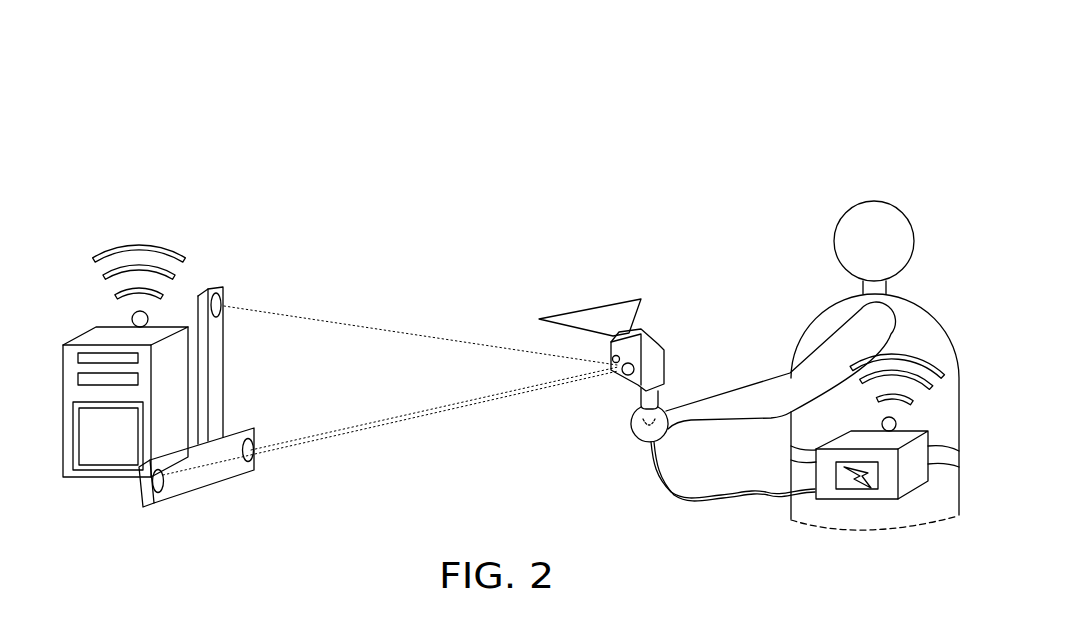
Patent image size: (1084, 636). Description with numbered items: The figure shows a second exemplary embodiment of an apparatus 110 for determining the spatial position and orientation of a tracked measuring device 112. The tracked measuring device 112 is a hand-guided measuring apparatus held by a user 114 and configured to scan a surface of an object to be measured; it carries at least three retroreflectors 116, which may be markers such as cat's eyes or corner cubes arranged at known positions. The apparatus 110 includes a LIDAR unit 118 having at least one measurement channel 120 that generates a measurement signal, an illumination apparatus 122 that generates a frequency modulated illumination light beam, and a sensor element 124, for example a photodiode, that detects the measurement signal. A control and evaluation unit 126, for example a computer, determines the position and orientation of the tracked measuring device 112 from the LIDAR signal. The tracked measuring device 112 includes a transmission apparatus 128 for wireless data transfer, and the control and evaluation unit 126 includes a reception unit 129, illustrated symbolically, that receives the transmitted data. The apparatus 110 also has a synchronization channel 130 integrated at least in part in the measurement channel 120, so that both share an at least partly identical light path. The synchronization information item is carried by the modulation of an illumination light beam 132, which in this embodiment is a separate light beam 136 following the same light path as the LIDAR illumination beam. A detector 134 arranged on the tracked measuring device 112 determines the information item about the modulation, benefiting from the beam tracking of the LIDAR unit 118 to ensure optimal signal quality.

The apparatus 110 is at (582, 171).
The tracked measuring device 112 is at (657, 333).
The user 114 is at (868, 228).
The retroreflectors 116 is at (610, 357).
The LIDAR unit 118 is at (228, 280).
The measurement channel 120 is at (244, 412).
The illumination apparatus 122 is at (224, 298).
The sensor element 124 is at (164, 495).
The control and evaluation unit 126 is at (102, 457).
The transmission apparatus 128 is at (852, 496).
The reception unit 129 is at (130, 322).
The synchronization channel 130 is at (390, 390).
The illumination light beam 132 is at (390, 390).
The detector 134 is at (620, 374).
The separate light beam 136 is at (460, 409).